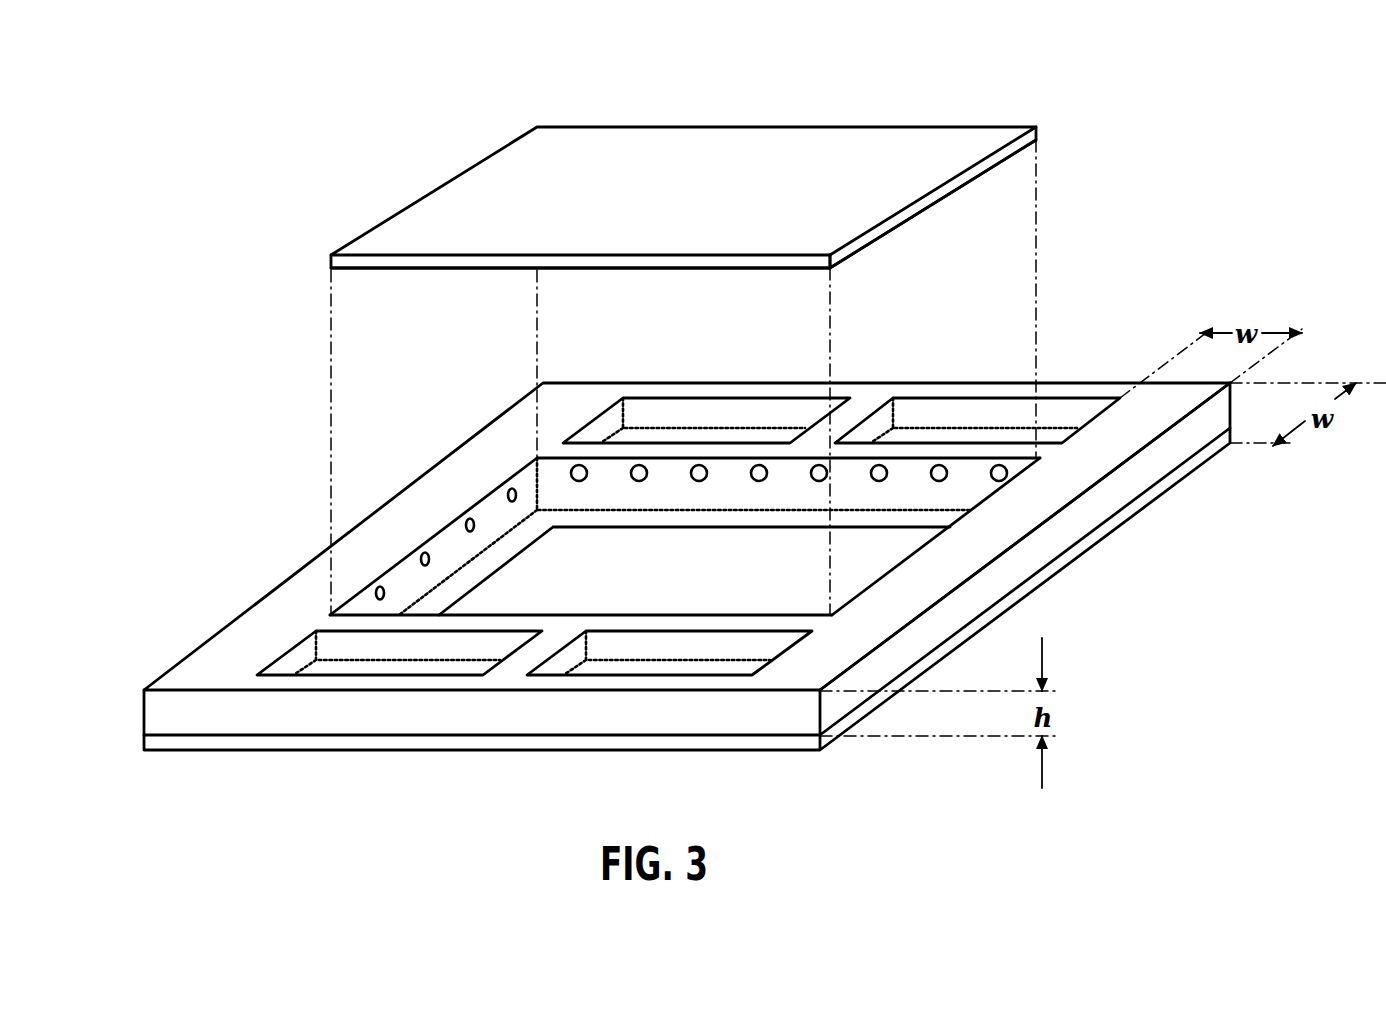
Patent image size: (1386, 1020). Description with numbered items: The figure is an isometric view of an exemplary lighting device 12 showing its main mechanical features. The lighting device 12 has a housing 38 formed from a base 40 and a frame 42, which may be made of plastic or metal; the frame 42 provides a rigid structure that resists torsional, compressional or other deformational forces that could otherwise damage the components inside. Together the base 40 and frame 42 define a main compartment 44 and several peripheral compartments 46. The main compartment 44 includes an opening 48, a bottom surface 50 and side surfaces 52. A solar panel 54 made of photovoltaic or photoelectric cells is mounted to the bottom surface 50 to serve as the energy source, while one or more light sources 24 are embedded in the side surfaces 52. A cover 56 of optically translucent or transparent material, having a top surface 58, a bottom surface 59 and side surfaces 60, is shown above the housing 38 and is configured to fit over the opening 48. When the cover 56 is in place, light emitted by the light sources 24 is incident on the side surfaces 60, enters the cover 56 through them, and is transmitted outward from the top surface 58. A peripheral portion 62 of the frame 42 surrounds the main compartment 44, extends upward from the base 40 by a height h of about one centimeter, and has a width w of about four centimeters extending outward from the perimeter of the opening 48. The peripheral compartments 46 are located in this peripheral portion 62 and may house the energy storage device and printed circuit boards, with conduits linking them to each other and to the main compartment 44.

The lighting device 12 is at (1173, 128).
The light sources 24 is at (762, 465).
The housing 38 is at (1078, 381).
The base 40 is at (1075, 553).
The frame 42 is at (1112, 497).
The main compartment 44 is at (527, 478).
The peripheral compartments 46 is at (690, 412).
The opening 48 is at (871, 580).
The bottom surface 50 is at (470, 584).
The side surfaces 52 is at (415, 584).
The solar panel 54 is at (687, 593).
The cover 56 is at (976, 126).
The top surface 58 is at (654, 146).
The bottom surface 59 is at (853, 262).
The side surfaces 60 is at (961, 180).
The peripheral portion 62 is at (1052, 506).